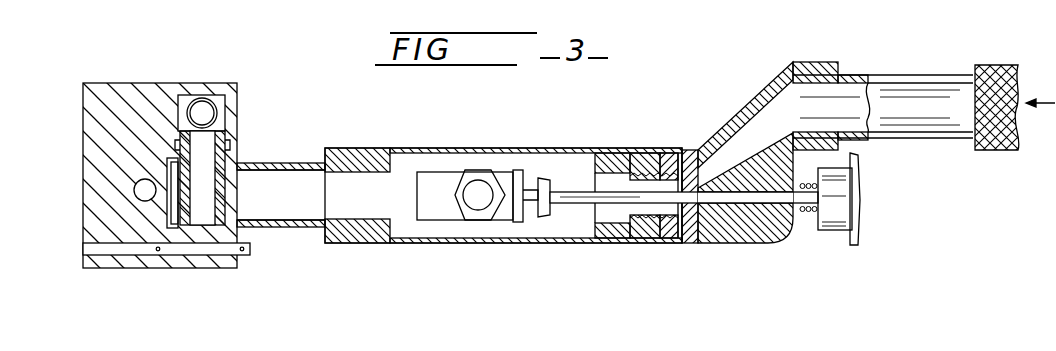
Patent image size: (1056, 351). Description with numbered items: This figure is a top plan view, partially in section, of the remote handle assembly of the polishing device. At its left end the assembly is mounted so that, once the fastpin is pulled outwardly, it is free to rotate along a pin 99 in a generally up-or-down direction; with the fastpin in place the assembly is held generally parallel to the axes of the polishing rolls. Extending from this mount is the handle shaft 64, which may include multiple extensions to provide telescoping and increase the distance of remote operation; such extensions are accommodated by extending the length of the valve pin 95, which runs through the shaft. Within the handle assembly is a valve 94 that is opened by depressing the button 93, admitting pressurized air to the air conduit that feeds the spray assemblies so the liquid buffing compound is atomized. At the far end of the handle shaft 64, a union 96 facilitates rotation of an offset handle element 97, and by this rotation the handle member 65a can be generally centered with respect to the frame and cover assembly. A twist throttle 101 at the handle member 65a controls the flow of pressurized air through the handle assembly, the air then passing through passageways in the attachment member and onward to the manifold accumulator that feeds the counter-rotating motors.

The handle shaft 64 is at (530, 148).
The handle member 65a is at (918, 128).
The button 93 is at (838, 222).
The valve 94 is at (545, 217).
The valve pin 95 is at (612, 205).
The union 96 is at (690, 243).
The offset handle element 97 is at (745, 108).
The pin 99 is at (207, 247).
The twist throttle 101 is at (997, 147).